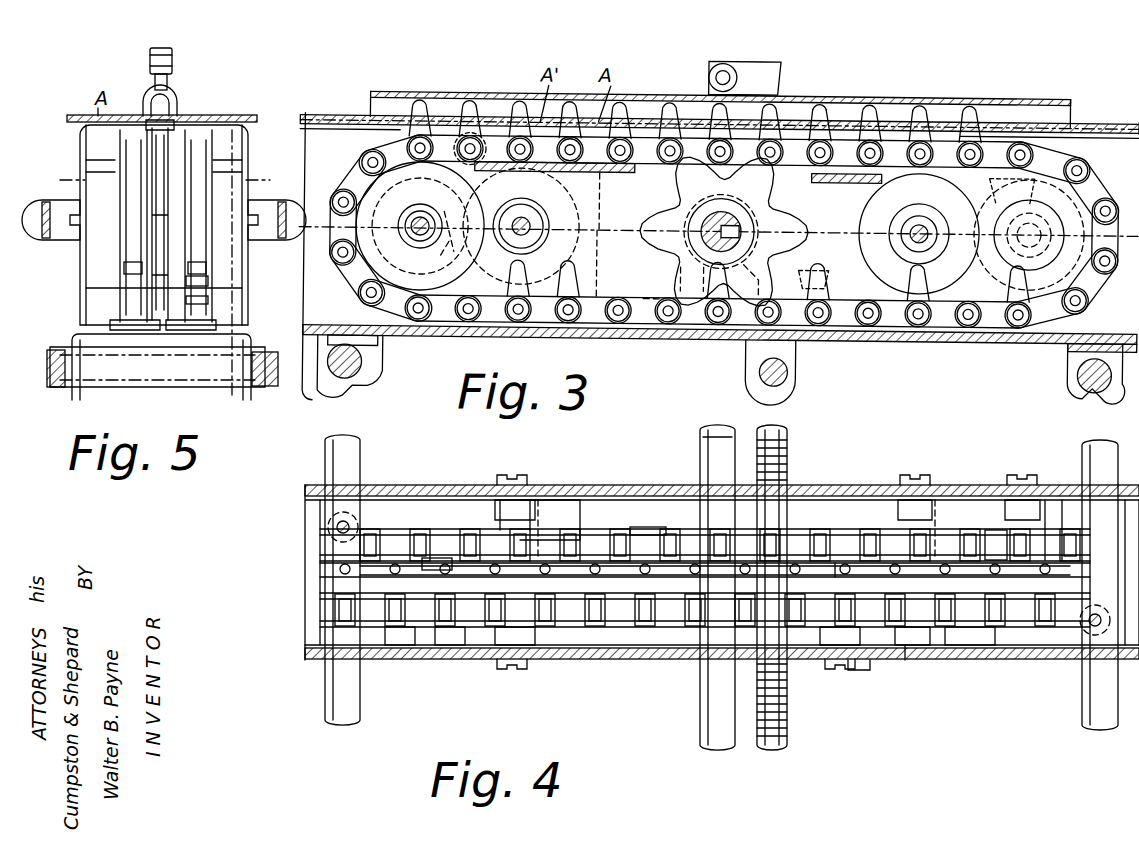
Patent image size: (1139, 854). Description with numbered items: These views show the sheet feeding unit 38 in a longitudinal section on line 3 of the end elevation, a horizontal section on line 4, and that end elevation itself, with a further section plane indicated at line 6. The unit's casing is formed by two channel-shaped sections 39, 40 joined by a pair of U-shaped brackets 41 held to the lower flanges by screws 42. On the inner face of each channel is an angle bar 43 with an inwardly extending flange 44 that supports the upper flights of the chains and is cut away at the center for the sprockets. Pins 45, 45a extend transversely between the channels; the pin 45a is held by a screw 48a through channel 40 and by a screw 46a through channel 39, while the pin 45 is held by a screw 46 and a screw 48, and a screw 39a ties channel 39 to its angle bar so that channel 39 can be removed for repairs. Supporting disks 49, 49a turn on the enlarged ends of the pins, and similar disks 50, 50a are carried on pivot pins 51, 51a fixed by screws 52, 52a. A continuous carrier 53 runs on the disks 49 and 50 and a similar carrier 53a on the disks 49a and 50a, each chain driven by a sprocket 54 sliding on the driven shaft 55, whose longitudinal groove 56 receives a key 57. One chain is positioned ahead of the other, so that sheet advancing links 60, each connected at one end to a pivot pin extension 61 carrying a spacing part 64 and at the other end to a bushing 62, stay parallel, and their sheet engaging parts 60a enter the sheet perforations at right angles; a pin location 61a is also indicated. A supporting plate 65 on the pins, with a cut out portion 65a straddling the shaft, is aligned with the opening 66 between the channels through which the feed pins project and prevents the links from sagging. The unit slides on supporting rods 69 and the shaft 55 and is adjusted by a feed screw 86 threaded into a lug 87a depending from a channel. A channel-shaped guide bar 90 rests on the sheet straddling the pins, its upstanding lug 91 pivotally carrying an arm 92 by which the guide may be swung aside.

In FIG. 5, the section line 3— 3 is at (180, 85).
In FIG. 5, the section line 4— 4 is at (52, 178).
In FIG. 5, the section line 6— 6 is at (294, 212).
In FIG. 3, the feeding unit 38 is at (845, 120).
In FIG. 4, the feeding unit 38 is at (458, 488).
In FIG. 5, the channel-shaped section 39 is at (246, 283).
In FIG. 3, the channel-shaped section 39 is at (480, 334).
In FIG. 4, the channel-shaped section 39 is at (655, 660).
In FIG. 4, the screw 39a is at (862, 660).
In FIG. 5, the channel-shaped section 40 is at (82, 297).
In FIG. 3, the channel-shaped section 40 is at (720, 261).
In FIG. 4, the channel-shaped section 40 is at (645, 488).
In FIG. 5, the U-shaped bracket 41 is at (248, 336).
In FIG. 3, the U-shaped bracket 41 is at (385, 345).
In FIG. 5, the screw 42 is at (120, 380).
In FIG. 3, the screw 42 is at (380, 355).
In FIG. 4, the screw 42 is at (328, 527).
In FIG. 5, the angle bar 43 is at (88, 258).
In FIG. 4, the angle bar 43 is at (835, 497).
In FIG. 5, the inwardly extending flange 44 is at (84, 150).
In FIG. 3, the inwardly extending flange 44 is at (500, 175).
In FIG. 3, the pin 45 is at (920, 222).
In FIG. 4, the pin 45 is at (938, 520).
In FIG. 3, the pin 45a is at (535, 225).
In FIG. 4, the pin 45a is at (545, 530).
In FIG. 4, the screw 46 is at (915, 495).
In FIG. 5, the screw 46a is at (250, 195).
In FIG. 4, the screw 46a is at (510, 660).
In FIG. 4, the screw 48 is at (905, 660).
In FIG. 5, the screw 48a is at (80, 192).
In FIG. 4, the screw 48a is at (515, 495).
In FIG. 5, the supporting disk 49 is at (128, 268).
In FIG. 3, the supporting disk 49 is at (580, 196).
In FIG. 4, the supporting disk 49 is at (565, 530).
In FIG. 3, the supporting disk 49a is at (918, 233).
In FIG. 4, the supporting disk 49a is at (950, 627).
In FIG. 3, the supporting disk 50 is at (1028, 236).
In FIG. 4, the supporting disk 50 is at (995, 545).
In FIG. 5, the supporting disk 50a is at (208, 280).
In FIG. 3, the supporting disk 50a is at (419, 225).
In FIG. 4, the supporting disk 50a is at (448, 610).
In FIG. 3, the pivot pin 51 is at (1038, 230).
In FIG. 4, the pivot pin 51 is at (1040, 510).
In FIG. 3, the pivot pin 51a is at (420, 222).
In FIG. 4, the pivot pin 51a is at (398, 645).
In FIG. 4, the screw 52 is at (1022, 495).
In FIG. 3, the screw 52a is at (405, 222).
In FIG. 5, the continuous carrier 53 is at (122, 306).
In FIG. 4, the continuous carrier 53 is at (640, 530).
In FIG. 5, the continuous carrier 53a is at (210, 300).
In FIG. 3, the continuous carrier 53a is at (652, 322).
In FIG. 4, the continuous carrier 53a is at (838, 660).
In FIG. 3, the sprocket 54 is at (790, 205).
In FIG. 4, the sprocket 54 is at (790, 545).
In FIG. 3, the driven shaft 55 is at (705, 238).
In FIG. 4, the driven shaft 55 is at (720, 450).
In FIG. 3, the longitudinally extending groove 56 is at (738, 222).
In FIG. 4, the longitudinally extending groove 56 is at (700, 716).
In FIG. 3, the key 57 is at (745, 280).
In FIG. 3, the sheet advancing link 60 is at (432, 135).
In FIG. 4, the sheet advancing link 60 is at (378, 556).
In FIG. 5, the sheet engaging part 60a is at (172, 98).
In FIG. 3, the sheet engaging part 60a is at (475, 112).
In FIG. 4, the pivot pin extension 61 is at (520, 580).
In FIG. 3, the chain pin 61a is at (459, 148).
In FIG. 4, the bushing 62 is at (410, 570).
In FIG. 4, the spacing part 64 is at (430, 560).
In FIG. 5, the supporting plate 65 is at (160, 210).
In FIG. 3, the supporting plate 65 is at (605, 345).
In FIG. 4, the supporting plate 65 is at (840, 575).
In FIG. 3, the cut out portion 65a is at (696, 277).
In FIG. 5, the opening 66 is at (148, 122).
In FIG. 3, the opening 66 is at (352, 124).
In FIG. 5, the supporting rod 69 is at (68, 385).
In FIG. 3, the supporting rod 69 is at (1100, 403).
In FIG. 4, the supporting rod 69 is at (330, 687).
In FIG. 5, the feed screw 86 is at (270, 382).
In FIG. 3, the feed screw 86 is at (777, 385).
In FIG. 4, the feed screw 86 is at (788, 714).
In FIG. 3, the lug 87a is at (800, 358).
In FIG. 5, the guide bar 90 is at (178, 103).
In FIG. 3, the guide bar 90 is at (655, 97).
In FIG. 5, the upstanding lug 91 is at (150, 87).
In FIG. 3, the upstanding lug 91 is at (710, 88).
In FIG. 5, the arm 92 is at (155, 70).
In FIG. 3, the arm 92 is at (745, 78).